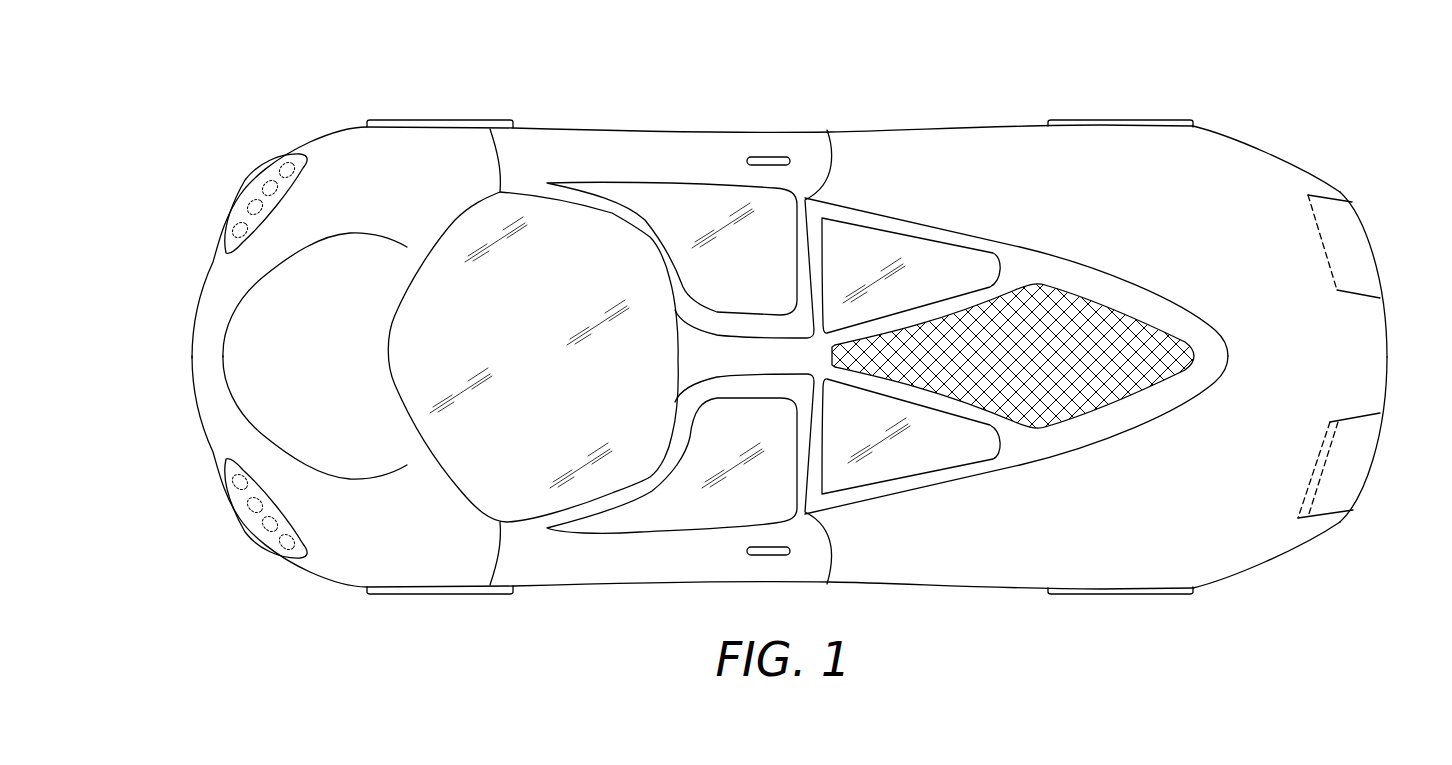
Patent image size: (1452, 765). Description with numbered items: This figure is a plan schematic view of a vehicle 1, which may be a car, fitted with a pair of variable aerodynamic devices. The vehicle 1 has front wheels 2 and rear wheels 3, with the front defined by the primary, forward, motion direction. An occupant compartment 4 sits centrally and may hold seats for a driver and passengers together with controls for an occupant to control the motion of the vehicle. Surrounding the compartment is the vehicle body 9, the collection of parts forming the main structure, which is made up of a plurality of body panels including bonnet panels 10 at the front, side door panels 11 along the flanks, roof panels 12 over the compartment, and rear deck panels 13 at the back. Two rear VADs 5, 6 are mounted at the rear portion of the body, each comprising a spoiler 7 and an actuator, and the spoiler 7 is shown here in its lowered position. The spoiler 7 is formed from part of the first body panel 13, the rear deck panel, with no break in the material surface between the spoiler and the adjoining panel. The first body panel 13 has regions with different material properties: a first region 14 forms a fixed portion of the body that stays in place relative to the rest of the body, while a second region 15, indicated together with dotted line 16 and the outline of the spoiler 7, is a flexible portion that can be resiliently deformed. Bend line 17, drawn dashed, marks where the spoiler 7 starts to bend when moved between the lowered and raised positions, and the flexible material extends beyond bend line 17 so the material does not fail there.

The vehicle 1 is at (248, 115).
The front wheels 2 is at (440, 120).
The rear wheels 3 is at (1125, 120).
The occupant compartment 4 is at (557, 240).
The rear variable aerodynamic device 5 is at (1350, 230).
The rear variable aerodynamic device 6 is at (1350, 478).
The spoiler 7 is at (1372, 270).
The vehicle body 9 is at (711, 149).
The bonnet panel 10 is at (245, 352).
The side door panel 11 is at (617, 148).
The roof panel 12 is at (693, 357).
The rear deck panel 13 is at (936, 141).
The first region 14 is at (1243, 187).
The second region 15 is at (1310, 487).
The dotted line 16 is at (1313, 458).
The bend line 17 is at (1312, 248).